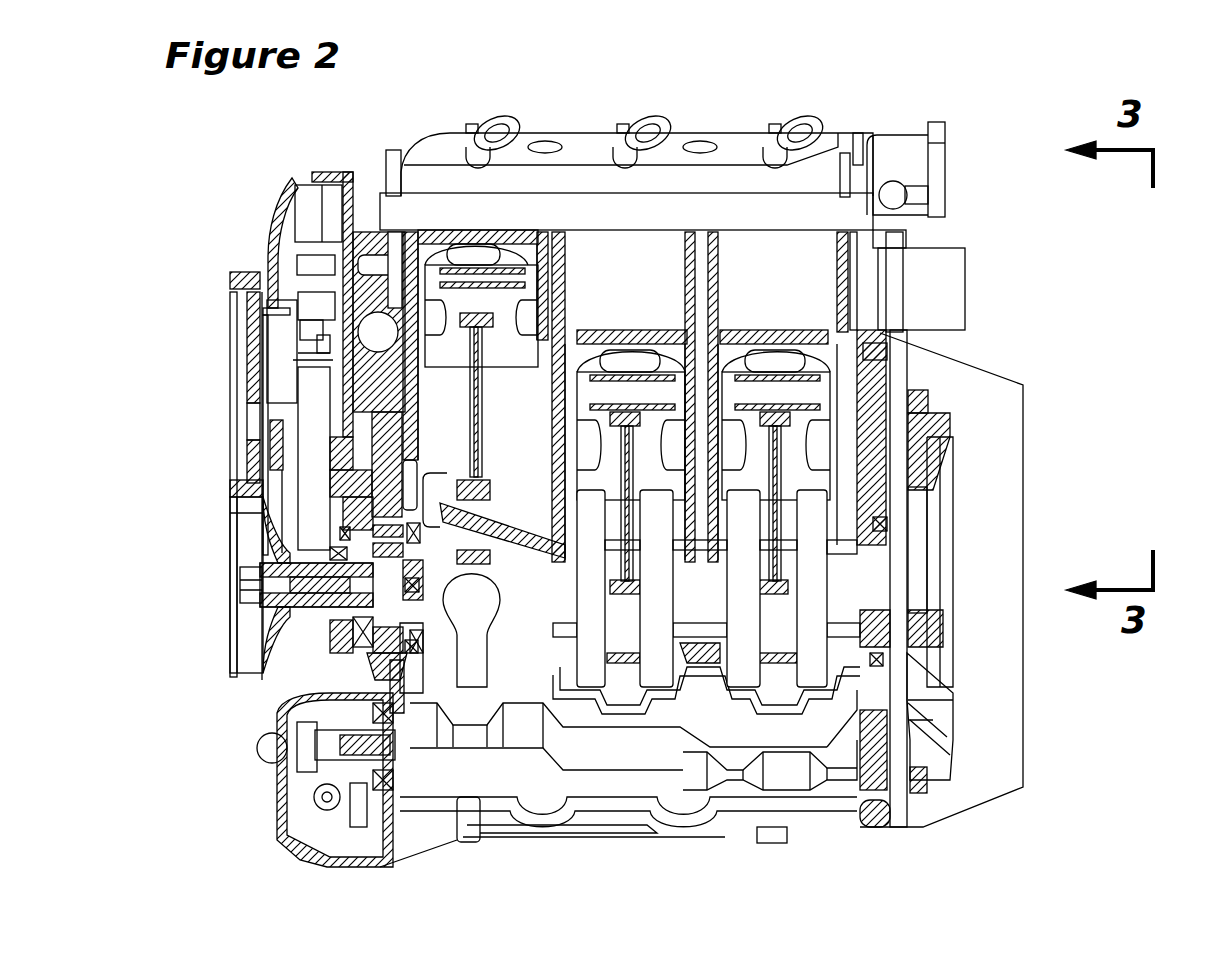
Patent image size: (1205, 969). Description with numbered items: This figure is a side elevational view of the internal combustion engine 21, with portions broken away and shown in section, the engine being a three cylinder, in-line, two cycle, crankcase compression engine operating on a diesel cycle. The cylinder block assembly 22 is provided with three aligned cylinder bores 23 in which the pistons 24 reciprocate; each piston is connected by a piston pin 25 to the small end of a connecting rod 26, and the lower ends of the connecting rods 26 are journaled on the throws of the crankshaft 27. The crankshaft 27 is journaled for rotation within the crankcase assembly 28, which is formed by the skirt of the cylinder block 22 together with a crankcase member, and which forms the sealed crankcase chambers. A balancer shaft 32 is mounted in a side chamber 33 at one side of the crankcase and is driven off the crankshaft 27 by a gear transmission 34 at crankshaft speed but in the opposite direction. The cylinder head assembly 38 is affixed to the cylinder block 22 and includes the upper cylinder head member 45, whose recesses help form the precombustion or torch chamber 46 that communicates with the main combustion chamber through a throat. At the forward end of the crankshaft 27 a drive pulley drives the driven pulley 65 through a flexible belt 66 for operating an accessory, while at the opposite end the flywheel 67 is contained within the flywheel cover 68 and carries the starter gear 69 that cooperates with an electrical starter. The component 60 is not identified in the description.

The internal combustion engine 21 is at (858, 75).
The cylinder block assembly 22 is at (900, 382).
The cylinder bores 23 is at (838, 270).
The pistons 24 is at (496, 240).
The piston pins 25 is at (515, 268).
The connecting rods 26 is at (480, 387).
The crankshaft 27 is at (907, 587).
The crankcase assembly 28 is at (898, 800).
The balancer shaft 32 is at (553, 760).
The side chamber 33 is at (740, 733).
The gear transmission 34 is at (282, 703).
The cylinder head assembly 38 is at (872, 125).
The upper cylinder head member 45 is at (703, 205).
The precombustion or torch chamber 46 is at (730, 142).
The drive bearing assembly 60 is at (255, 672).
The driven pulley 65 is at (230, 290).
The flexible belt 66 is at (240, 470).
The flywheel 67 is at (950, 733).
The flywheel cover 68 is at (1023, 740).
The starter gear 69 is at (950, 272).